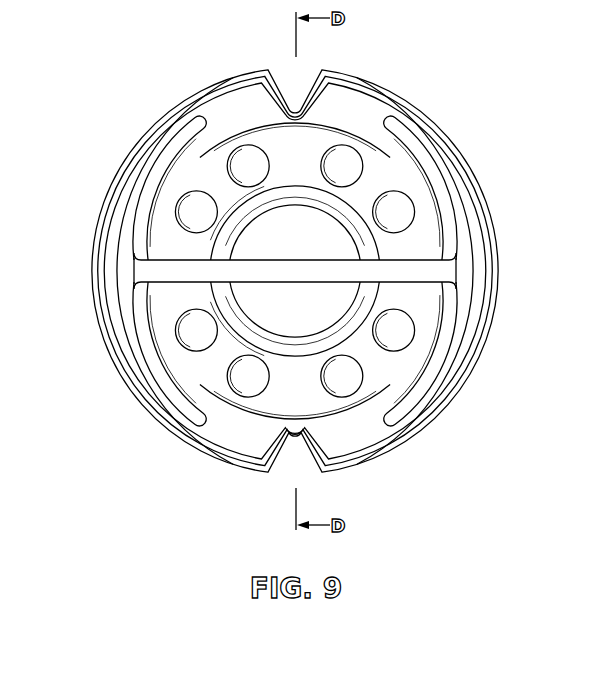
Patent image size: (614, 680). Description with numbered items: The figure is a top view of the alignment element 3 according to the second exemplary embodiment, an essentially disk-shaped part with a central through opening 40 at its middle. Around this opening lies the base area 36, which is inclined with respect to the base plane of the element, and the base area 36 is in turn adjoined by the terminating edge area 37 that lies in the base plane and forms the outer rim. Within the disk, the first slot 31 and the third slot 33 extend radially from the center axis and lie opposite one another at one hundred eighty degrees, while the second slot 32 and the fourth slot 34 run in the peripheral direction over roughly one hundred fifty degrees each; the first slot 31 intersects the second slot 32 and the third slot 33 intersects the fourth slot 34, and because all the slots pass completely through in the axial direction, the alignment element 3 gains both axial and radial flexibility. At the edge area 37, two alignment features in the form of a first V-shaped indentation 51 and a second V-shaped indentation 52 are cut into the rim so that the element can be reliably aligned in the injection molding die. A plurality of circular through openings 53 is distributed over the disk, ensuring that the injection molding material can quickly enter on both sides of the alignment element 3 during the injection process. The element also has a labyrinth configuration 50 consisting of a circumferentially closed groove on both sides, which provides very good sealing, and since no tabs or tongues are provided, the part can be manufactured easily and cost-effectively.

The alignment element 3 is at (292, 270).
The first slot 31 is at (168, 269).
The second slot 32 is at (121, 199).
The third slot 33 is at (432, 270).
The fourth slot 34 is at (455, 345).
The base area 36 is at (284, 154).
The edge area 37 is at (169, 125).
The through opening 40 is at (265, 325).
The labyrinth configuration 50 is at (471, 164).
The first V-shaped indentation 51 is at (284, 86).
The second V-shaped indentation 52 is at (284, 468).
The circular through openings 53 is at (345, 140).